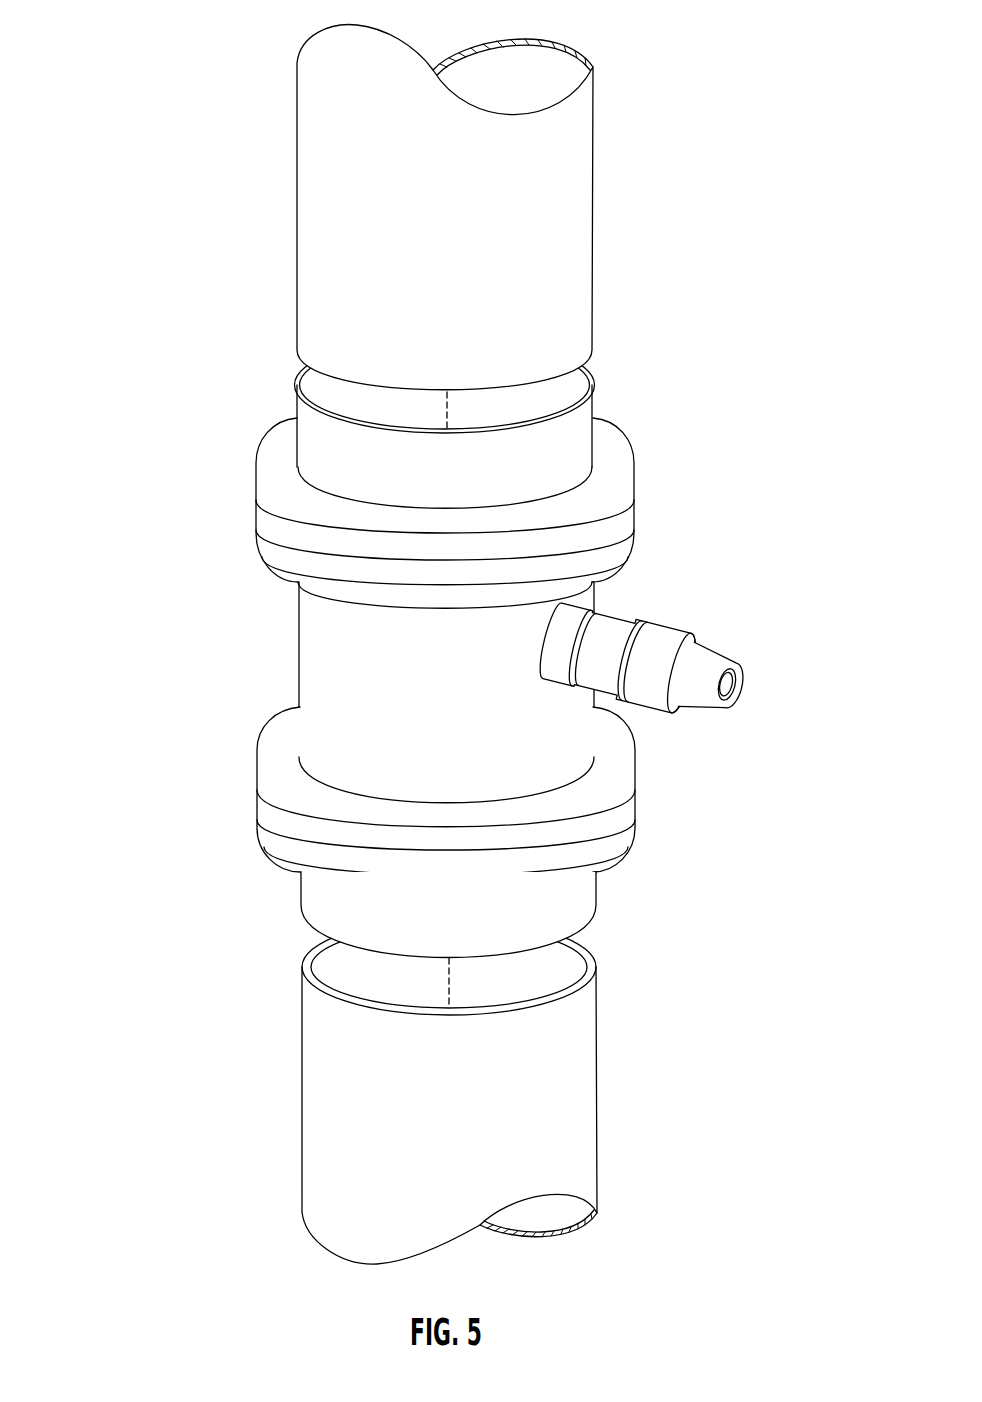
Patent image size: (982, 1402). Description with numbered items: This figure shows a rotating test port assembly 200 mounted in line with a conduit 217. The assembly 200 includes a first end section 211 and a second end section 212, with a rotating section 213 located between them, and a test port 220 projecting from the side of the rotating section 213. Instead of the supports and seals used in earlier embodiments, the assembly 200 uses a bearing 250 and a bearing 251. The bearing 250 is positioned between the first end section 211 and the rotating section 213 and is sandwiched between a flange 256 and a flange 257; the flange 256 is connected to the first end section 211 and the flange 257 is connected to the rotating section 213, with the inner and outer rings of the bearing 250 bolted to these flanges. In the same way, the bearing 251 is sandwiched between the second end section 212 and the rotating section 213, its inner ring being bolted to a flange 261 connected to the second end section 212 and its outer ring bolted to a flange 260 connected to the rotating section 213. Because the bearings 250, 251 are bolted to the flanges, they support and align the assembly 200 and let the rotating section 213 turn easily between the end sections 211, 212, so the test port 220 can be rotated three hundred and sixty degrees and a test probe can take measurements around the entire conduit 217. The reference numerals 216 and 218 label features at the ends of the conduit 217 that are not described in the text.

The test port assembly 200 is at (675, 233).
The first end section 211 is at (562, 448).
The second end section 212 is at (565, 902).
The rotating section 213 is at (318, 633).
The upper rim 216 is at (547, 367).
The conduit 217 is at (603, 180).
The lower rim 218 is at (583, 975).
The test port 220 is at (678, 629).
The bearing 250 is at (265, 520).
The bearing 251 is at (263, 805).
The flange 256 is at (275, 450).
The flange 257 is at (267, 545).
The flange 260 is at (277, 750).
The flange 261 is at (277, 842).